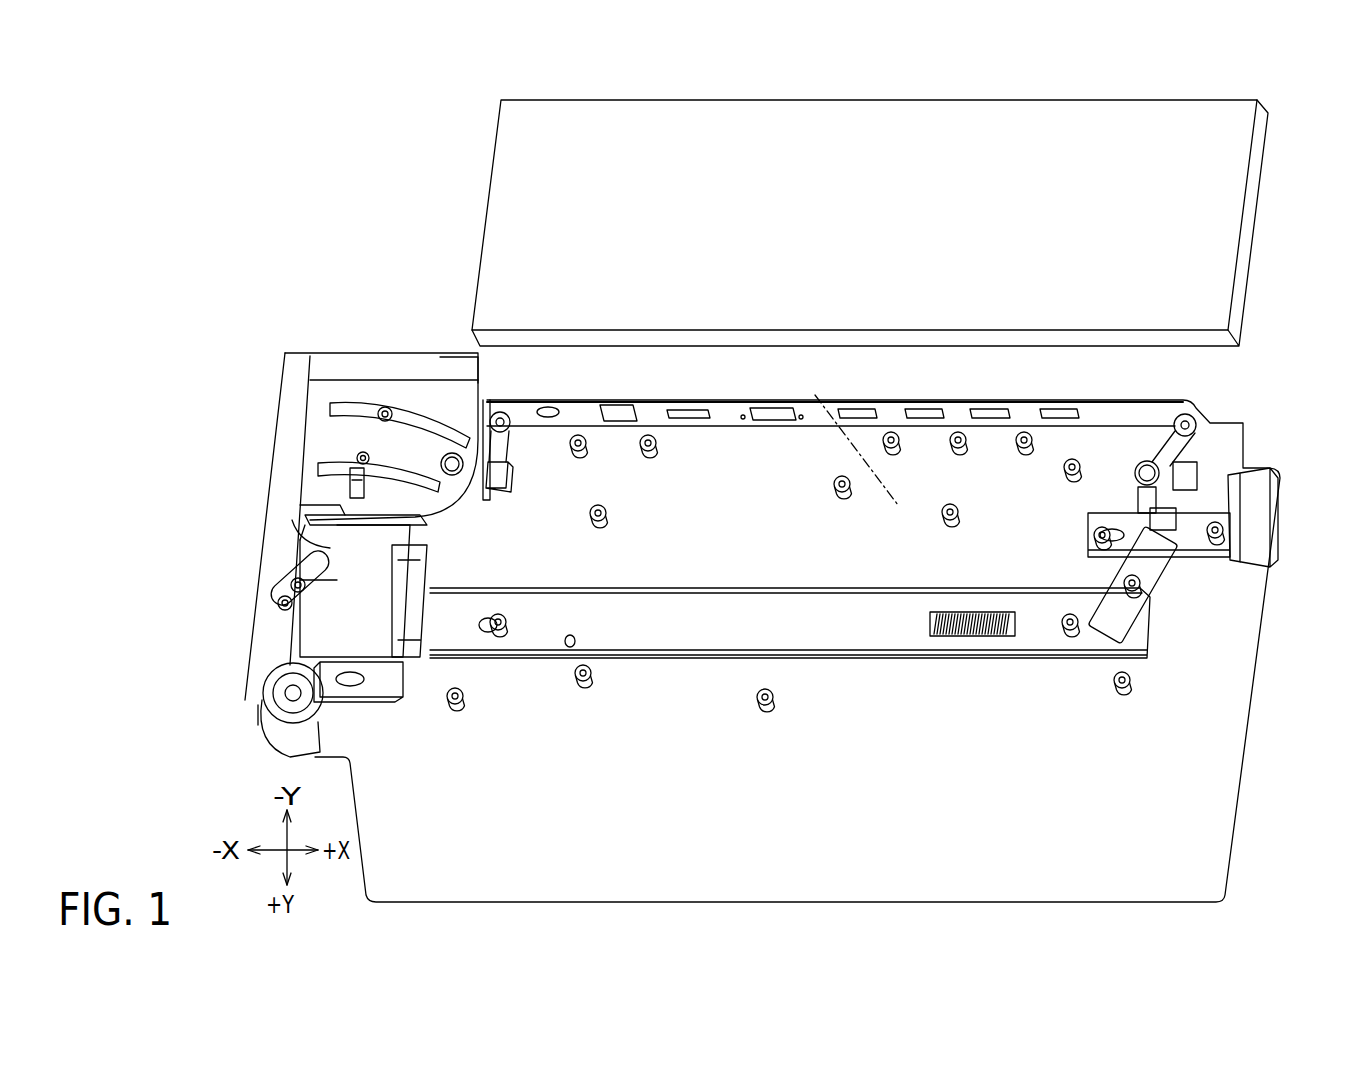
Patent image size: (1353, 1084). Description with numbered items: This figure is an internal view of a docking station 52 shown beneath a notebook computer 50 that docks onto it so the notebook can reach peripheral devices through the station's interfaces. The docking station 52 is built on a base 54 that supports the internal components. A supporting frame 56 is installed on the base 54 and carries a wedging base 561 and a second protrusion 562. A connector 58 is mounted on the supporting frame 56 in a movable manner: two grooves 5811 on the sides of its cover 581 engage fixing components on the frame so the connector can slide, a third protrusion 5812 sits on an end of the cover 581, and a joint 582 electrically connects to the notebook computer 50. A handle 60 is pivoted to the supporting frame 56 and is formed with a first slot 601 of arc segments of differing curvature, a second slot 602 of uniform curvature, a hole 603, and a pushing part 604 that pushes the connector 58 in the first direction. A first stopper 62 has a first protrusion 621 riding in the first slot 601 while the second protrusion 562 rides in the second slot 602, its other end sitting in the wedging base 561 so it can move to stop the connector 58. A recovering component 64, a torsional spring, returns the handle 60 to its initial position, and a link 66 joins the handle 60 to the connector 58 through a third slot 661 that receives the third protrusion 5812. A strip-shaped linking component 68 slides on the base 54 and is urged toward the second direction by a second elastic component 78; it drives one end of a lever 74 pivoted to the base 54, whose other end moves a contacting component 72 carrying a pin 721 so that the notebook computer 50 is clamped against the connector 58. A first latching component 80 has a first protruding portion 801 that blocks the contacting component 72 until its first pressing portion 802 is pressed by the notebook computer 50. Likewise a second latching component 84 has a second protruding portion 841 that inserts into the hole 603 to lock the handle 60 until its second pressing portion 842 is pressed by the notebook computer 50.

The notebook computer 50 is at (515, 193).
The docking station 52 is at (416, 310).
The base 54 is at (1210, 850).
The supporting frame 56 is at (308, 440).
The wedging base 561 is at (330, 505).
The second protrusion 562 is at (393, 413).
The connector 58 is at (244, 605).
The cover 581 is at (268, 582).
The grooves 5811 is at (310, 508).
The third protrusion 5812 is at (298, 582).
The joint 582 is at (300, 650).
The handle 60 is at (298, 476).
The first slot 601 is at (343, 405).
The second slot 602 is at (333, 465).
The hole 603 is at (450, 455).
The pushing part 604 is at (290, 530).
The first stopper 62 is at (301, 451).
The first protrusion 621 is at (357, 458).
The recovering component 64 is at (268, 710).
The link 66 is at (267, 580).
The third slot 661 is at (318, 565).
The linking component 68 is at (862, 630).
The contacting component 72 is at (1203, 517).
The pin 721 is at (1235, 468).
The lever 74 is at (1140, 565).
The second elastic component 78 is at (1000, 640).
The first latching component 80 is at (1233, 428).
The first protruding portion 801 is at (1185, 505).
The first pressing portion 802 is at (1196, 422).
The second latching component 84 is at (529, 419).
The second protruding portion 841 is at (484, 398).
The second pressing portion 842 is at (500, 473).